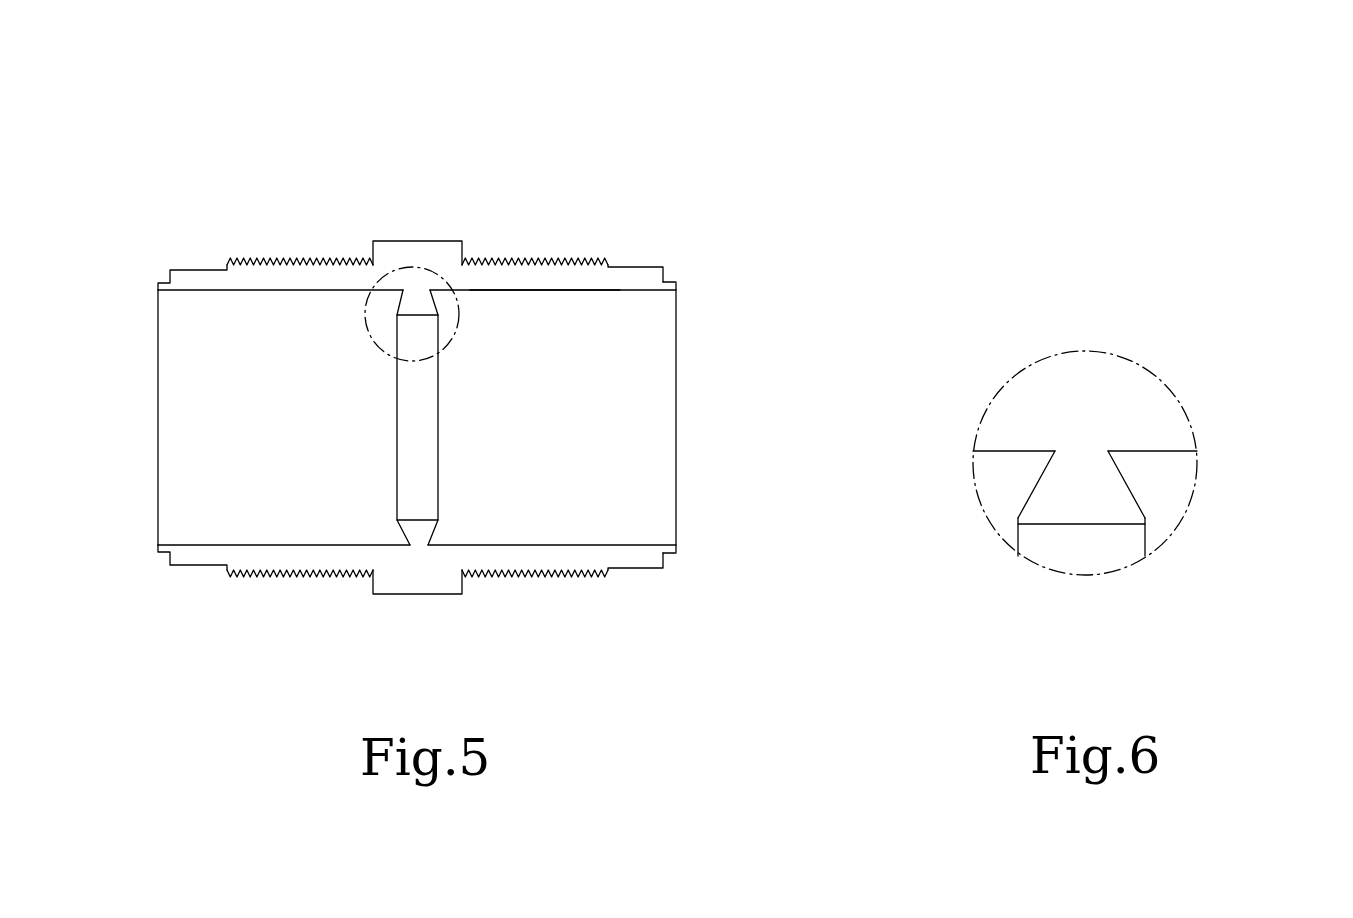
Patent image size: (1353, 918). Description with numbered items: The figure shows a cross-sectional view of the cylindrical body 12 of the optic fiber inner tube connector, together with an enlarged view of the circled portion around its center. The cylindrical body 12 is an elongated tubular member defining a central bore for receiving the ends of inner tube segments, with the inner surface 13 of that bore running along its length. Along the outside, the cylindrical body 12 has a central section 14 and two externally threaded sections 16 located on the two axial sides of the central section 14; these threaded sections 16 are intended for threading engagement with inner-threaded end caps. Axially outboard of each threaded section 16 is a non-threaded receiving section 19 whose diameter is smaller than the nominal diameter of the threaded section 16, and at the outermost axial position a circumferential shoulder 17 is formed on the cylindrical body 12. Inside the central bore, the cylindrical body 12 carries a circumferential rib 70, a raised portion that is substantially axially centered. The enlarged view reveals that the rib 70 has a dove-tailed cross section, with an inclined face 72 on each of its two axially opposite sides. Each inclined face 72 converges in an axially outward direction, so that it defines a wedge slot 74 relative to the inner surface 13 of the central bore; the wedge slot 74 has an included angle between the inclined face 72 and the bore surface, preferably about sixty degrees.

In FIG. 5, the cylindrical body 12 is at (396, 140).
In FIG. 6, the cylindrical body 12 is at (1132, 378).
In FIG. 5, the outer surface 13 is at (620, 290).
In FIG. 6, the outer surface 13 is at (997, 453).
In FIG. 5, the central section 14 is at (433, 242).
In FIG. 5, the externally threaded section 16 is at (547, 258).
In FIG. 5, the circumferential shoulder 17 is at (673, 281).
In FIG. 5, the non-threaded receiving section 19 is at (630, 268).
In FIG. 5, the circumferential rib 70 is at (410, 304).
In FIG. 6, the circumferential rib 70 is at (1103, 508).
In FIG. 6, the inclined face 72 is at (1142, 505).
In FIG. 6, the wedge slot 74 is at (1017, 482).